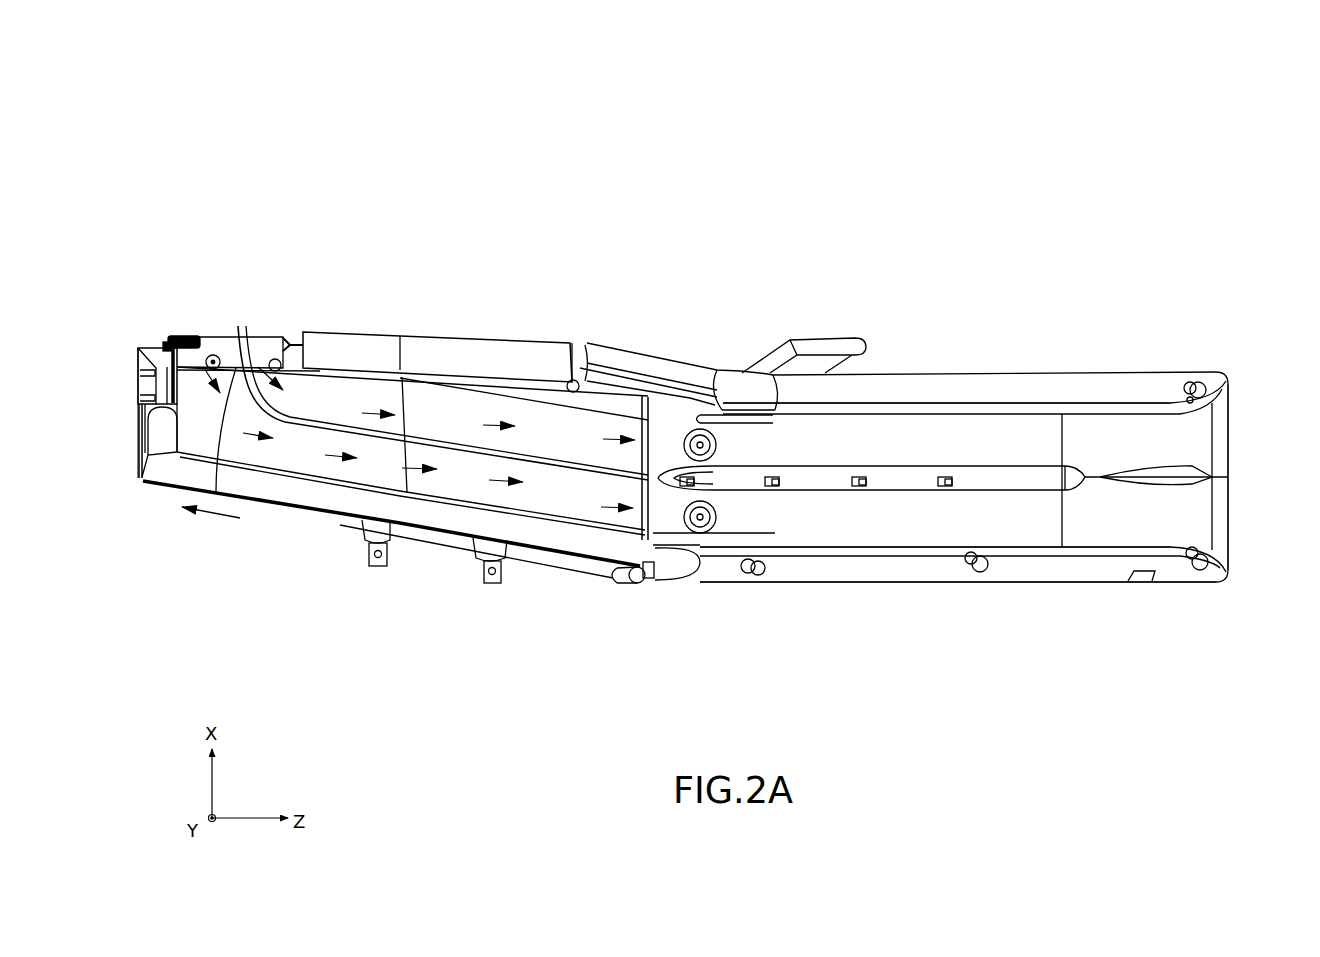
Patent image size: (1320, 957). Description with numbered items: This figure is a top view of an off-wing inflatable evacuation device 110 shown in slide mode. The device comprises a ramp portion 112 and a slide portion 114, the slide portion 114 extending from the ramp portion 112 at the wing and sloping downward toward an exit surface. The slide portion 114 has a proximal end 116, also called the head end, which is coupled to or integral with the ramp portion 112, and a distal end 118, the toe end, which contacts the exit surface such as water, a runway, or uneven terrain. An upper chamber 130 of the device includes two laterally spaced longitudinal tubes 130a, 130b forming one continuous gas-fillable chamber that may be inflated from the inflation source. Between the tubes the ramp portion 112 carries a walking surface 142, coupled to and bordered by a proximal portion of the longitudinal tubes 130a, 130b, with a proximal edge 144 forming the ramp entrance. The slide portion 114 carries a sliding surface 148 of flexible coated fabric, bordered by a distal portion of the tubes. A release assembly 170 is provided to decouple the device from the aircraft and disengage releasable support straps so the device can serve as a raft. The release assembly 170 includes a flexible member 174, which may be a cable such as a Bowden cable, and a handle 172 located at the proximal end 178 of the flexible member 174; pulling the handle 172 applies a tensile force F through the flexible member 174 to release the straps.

The inflatable evacuation device 110 is at (191, 176).
The ramp portion 112 is at (670, 215).
The slide portion 114 is at (1222, 250).
The proximal end 116 is at (688, 614).
The distal end 118 is at (1257, 587).
The upper chamber 130 is at (970, 673).
The longitudinal tube 130a is at (340, 500).
The longitudinal tube 130b is at (527, 348).
The walking surface 142 is at (451, 427).
The proximal edge 144 is at (107, 494).
The sliding surface 148 is at (1004, 524).
The release assembly 170 is at (302, 280).
The handle 172 is at (186, 336).
The flexible member 174 is at (240, 332).
The proximal end 178 is at (168, 341).